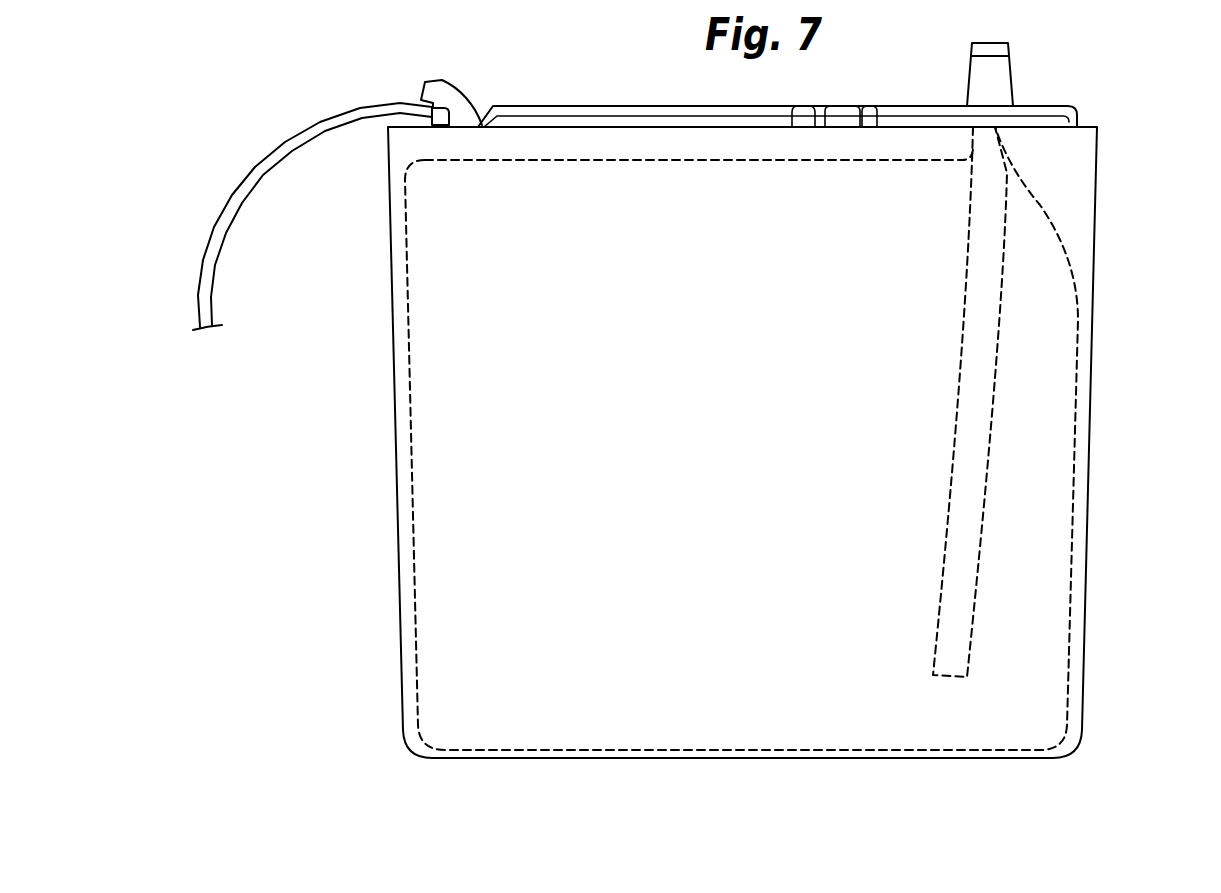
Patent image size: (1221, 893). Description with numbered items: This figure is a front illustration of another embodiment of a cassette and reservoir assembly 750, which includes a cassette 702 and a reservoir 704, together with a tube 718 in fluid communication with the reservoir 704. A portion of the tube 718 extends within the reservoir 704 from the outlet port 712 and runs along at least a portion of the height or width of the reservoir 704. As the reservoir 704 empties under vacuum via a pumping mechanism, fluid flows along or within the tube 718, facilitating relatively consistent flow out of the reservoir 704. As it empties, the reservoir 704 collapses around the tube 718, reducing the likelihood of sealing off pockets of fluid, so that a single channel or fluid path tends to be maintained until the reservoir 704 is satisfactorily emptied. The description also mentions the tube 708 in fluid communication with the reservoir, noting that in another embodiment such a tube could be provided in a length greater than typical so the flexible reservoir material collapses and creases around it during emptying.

The cassette 702 is at (1095, 207).
The reservoir 704 is at (1077, 273).
The tube 708 is at (318, 125).
The outlet port 712 is at (990, 142).
The tube 718 is at (993, 448).
The cassette and reservoir assembly 750 is at (751, 804).